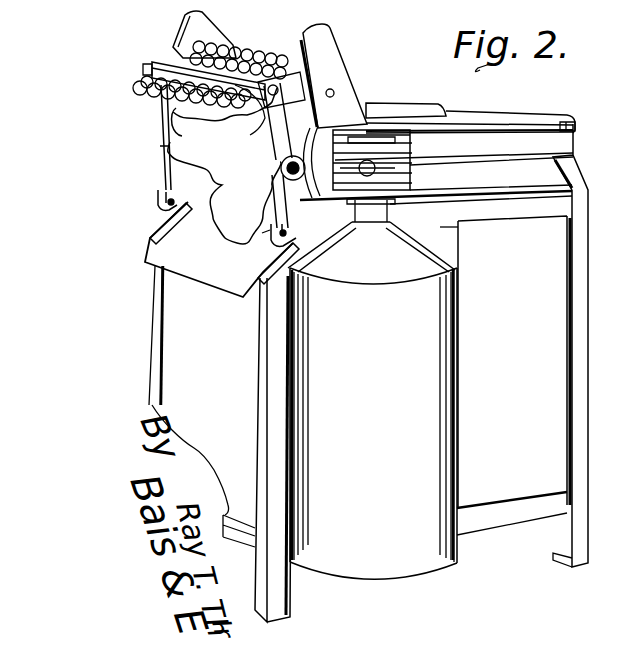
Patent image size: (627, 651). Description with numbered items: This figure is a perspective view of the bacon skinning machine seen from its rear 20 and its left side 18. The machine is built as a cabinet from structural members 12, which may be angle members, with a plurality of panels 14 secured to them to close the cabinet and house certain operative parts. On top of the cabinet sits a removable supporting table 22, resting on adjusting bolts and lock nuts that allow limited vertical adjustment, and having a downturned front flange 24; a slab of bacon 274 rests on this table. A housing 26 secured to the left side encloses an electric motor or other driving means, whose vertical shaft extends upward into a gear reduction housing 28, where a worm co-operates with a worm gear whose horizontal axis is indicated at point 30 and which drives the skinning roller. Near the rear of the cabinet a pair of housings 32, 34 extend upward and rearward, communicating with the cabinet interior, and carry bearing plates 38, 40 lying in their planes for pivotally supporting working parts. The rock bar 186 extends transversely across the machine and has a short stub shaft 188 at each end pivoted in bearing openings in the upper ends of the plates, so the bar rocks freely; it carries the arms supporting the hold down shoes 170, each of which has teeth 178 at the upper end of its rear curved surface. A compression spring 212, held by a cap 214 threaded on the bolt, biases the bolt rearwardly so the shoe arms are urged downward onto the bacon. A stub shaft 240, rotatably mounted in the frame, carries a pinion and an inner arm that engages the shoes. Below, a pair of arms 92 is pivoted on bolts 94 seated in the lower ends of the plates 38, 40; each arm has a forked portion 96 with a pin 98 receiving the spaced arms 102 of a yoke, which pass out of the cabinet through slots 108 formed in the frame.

The structural members 12 is at (262, 378).
The panels 14 is at (182, 343).
The left side of the machine 18 is at (545, 252).
The rear of the machine 20 is at (208, 312).
The removable supporting table 22 is at (482, 112).
The downturned front flange 24 is at (577, 129).
The housing 26 is at (433, 368).
The gear reduction housing 28 is at (413, 153).
The horizontal axis of the worm gear 30 is at (412, 186).
The housing 32 is at (187, 30).
The housing 34 is at (332, 57).
The bearing plate 38 is at (167, 103).
The bearing plate 40 is at (298, 105).
The arms 92 is at (173, 173).
The bolts 94 is at (298, 158).
The forked portion 96 is at (155, 197).
The pin 98 is at (168, 207).
The spaced arms 102 is at (163, 217).
The slots 108 is at (178, 214).
The hold down shoes 170 is at (267, 45).
The teeth 178 is at (222, 53).
The rock bar 186 is at (194, 124).
The stub shaft 188 is at (267, 120).
The compression spring 212 is at (140, 92).
The cap 214 is at (157, 100).
The stub shaft 240 is at (335, 93).
The slab of bacon 274 is at (392, 112).